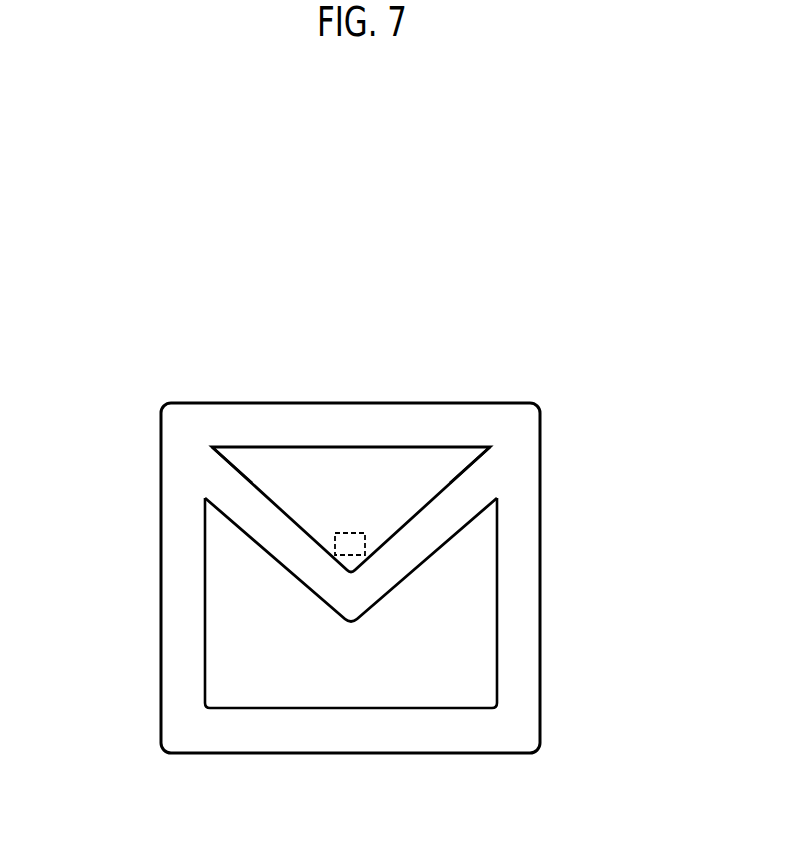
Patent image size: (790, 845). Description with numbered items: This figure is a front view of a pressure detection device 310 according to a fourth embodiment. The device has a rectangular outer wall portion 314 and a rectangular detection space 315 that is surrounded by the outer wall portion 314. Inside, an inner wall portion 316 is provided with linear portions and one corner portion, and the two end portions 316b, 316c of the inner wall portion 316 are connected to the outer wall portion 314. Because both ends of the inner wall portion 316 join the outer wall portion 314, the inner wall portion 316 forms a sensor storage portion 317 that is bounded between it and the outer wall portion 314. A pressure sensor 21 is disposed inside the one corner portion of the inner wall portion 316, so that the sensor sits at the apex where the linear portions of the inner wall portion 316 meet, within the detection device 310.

The pressure detection device 310 is at (503, 367).
The outer wall portion 314 is at (515, 623).
The detection space 315 is at (375, 678).
The inner wall portion 316 is at (417, 552).
The end portion 316b is at (488, 466).
The end portion 316c is at (208, 474).
The sensor storage portion 317 is at (338, 472).
The pressure sensor 21 is at (350, 558).